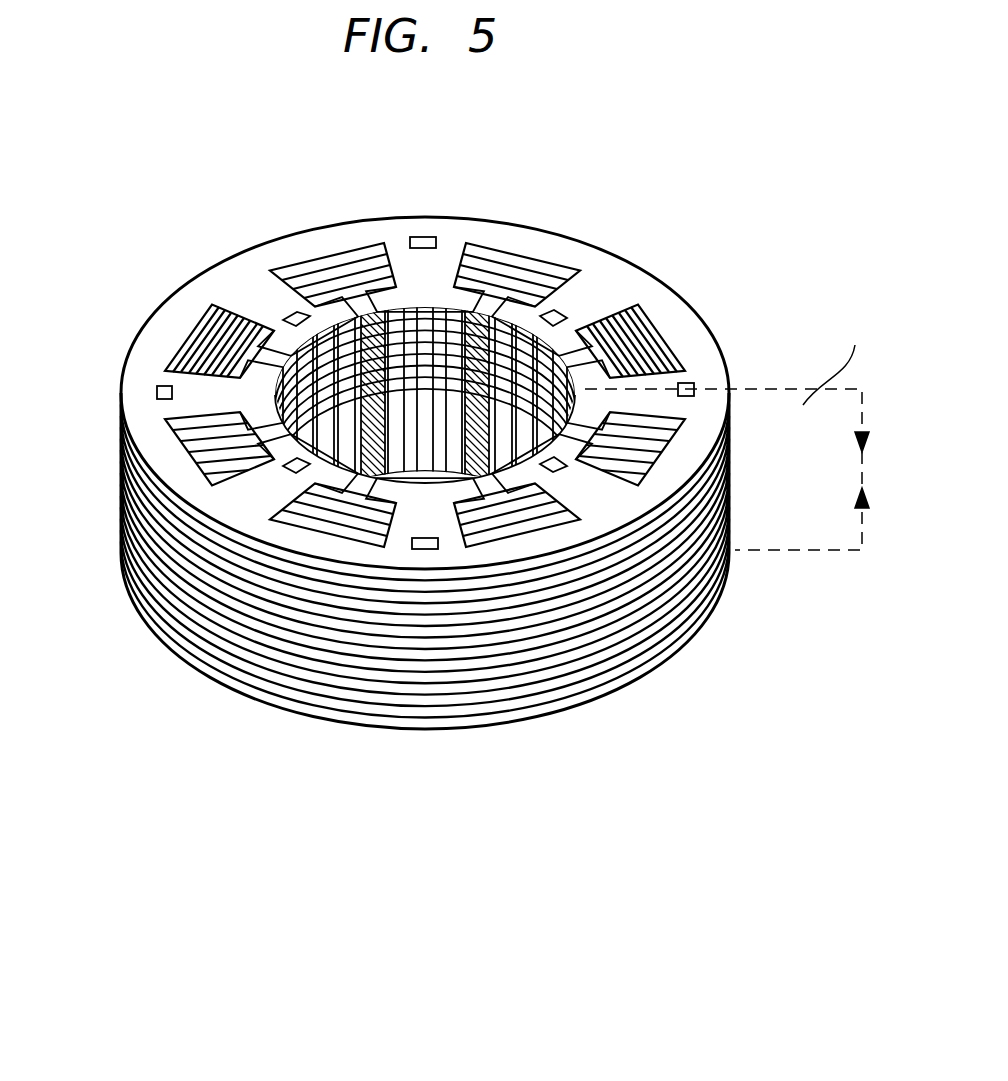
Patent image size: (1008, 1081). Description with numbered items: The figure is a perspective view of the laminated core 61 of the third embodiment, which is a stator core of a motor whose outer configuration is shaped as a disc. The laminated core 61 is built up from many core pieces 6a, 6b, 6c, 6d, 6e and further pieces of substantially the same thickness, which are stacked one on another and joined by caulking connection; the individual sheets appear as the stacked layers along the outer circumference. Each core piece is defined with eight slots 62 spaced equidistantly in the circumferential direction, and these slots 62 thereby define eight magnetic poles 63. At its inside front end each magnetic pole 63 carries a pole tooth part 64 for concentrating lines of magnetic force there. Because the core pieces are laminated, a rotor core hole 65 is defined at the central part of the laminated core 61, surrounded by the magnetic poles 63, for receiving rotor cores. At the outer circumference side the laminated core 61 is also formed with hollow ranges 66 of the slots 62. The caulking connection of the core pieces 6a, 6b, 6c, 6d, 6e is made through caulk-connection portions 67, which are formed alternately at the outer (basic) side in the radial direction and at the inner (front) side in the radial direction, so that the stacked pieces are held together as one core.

The laminated core 61 is at (445, 512).
The core piece 6a is at (372, 718).
The core piece 6b is at (347, 709).
The core piece 6c is at (325, 698).
The core piece 6d is at (302, 688).
The core piece 6e is at (275, 678).
The slot 62 is at (645, 420).
The magnetic pole 63 is at (230, 487).
The pole tooth part 64 is at (418, 492).
The rotor core hole 65 is at (431, 298).
The hollow range 66 is at (514, 250).
The caulk-connection portion 67 is at (296, 316).